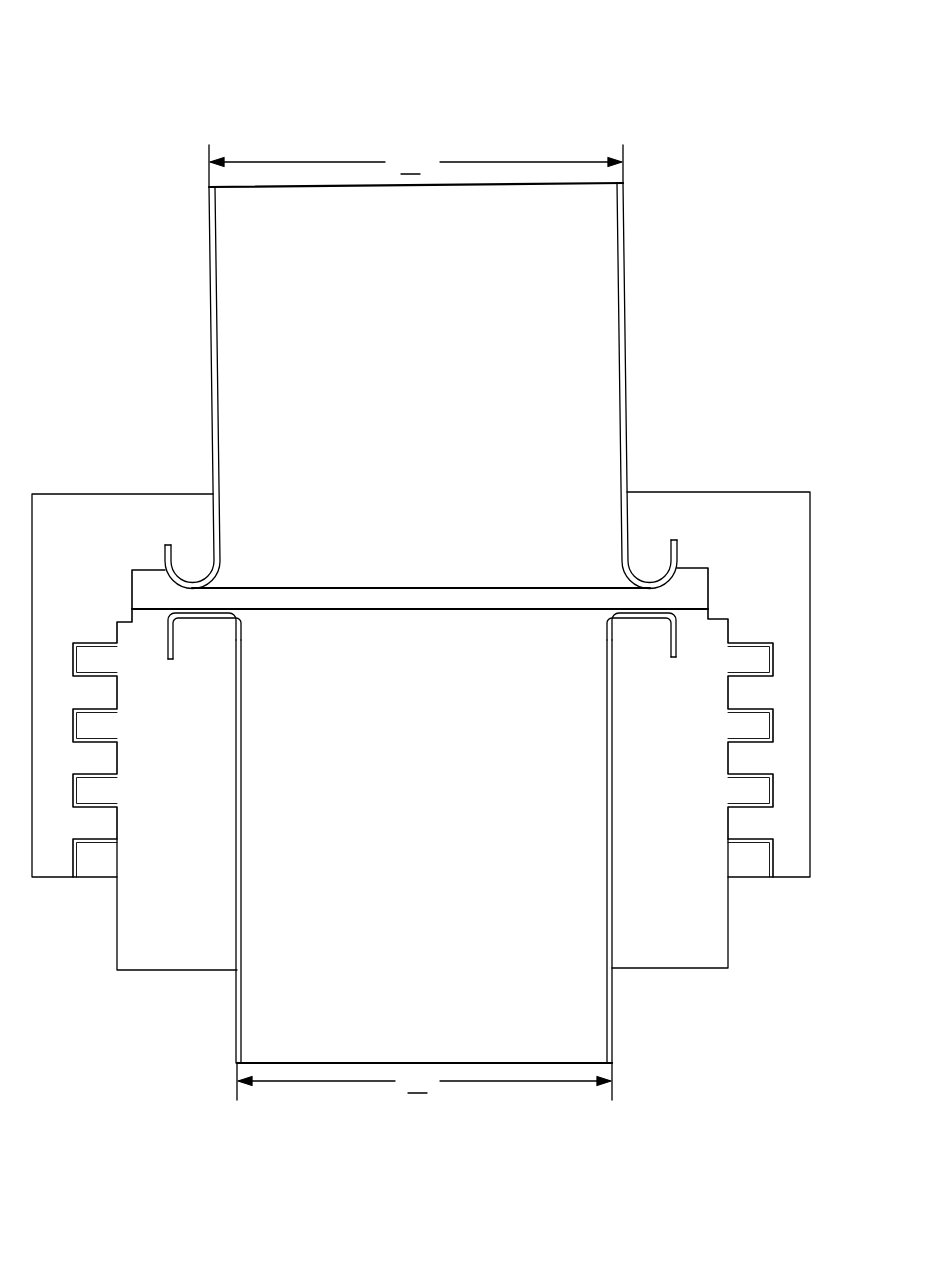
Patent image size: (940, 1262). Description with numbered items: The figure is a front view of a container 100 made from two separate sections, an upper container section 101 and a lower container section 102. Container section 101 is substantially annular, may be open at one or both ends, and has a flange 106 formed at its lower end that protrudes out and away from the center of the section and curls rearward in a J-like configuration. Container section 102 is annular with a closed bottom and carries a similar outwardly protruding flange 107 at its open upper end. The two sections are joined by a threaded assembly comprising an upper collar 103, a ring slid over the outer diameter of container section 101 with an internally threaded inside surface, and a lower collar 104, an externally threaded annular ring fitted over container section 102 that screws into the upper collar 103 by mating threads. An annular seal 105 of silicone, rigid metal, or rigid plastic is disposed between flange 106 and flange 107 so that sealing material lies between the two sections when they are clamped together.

The container 100 is at (201, 79).
The container section 101 is at (206, 350).
The container section 102 is at (237, 1018).
The upper collar 103 is at (135, 492).
The lower collar 104 is at (643, 970).
The seal 105 is at (426, 610).
The flange 106 is at (650, 583).
The flange 107 is at (207, 620).